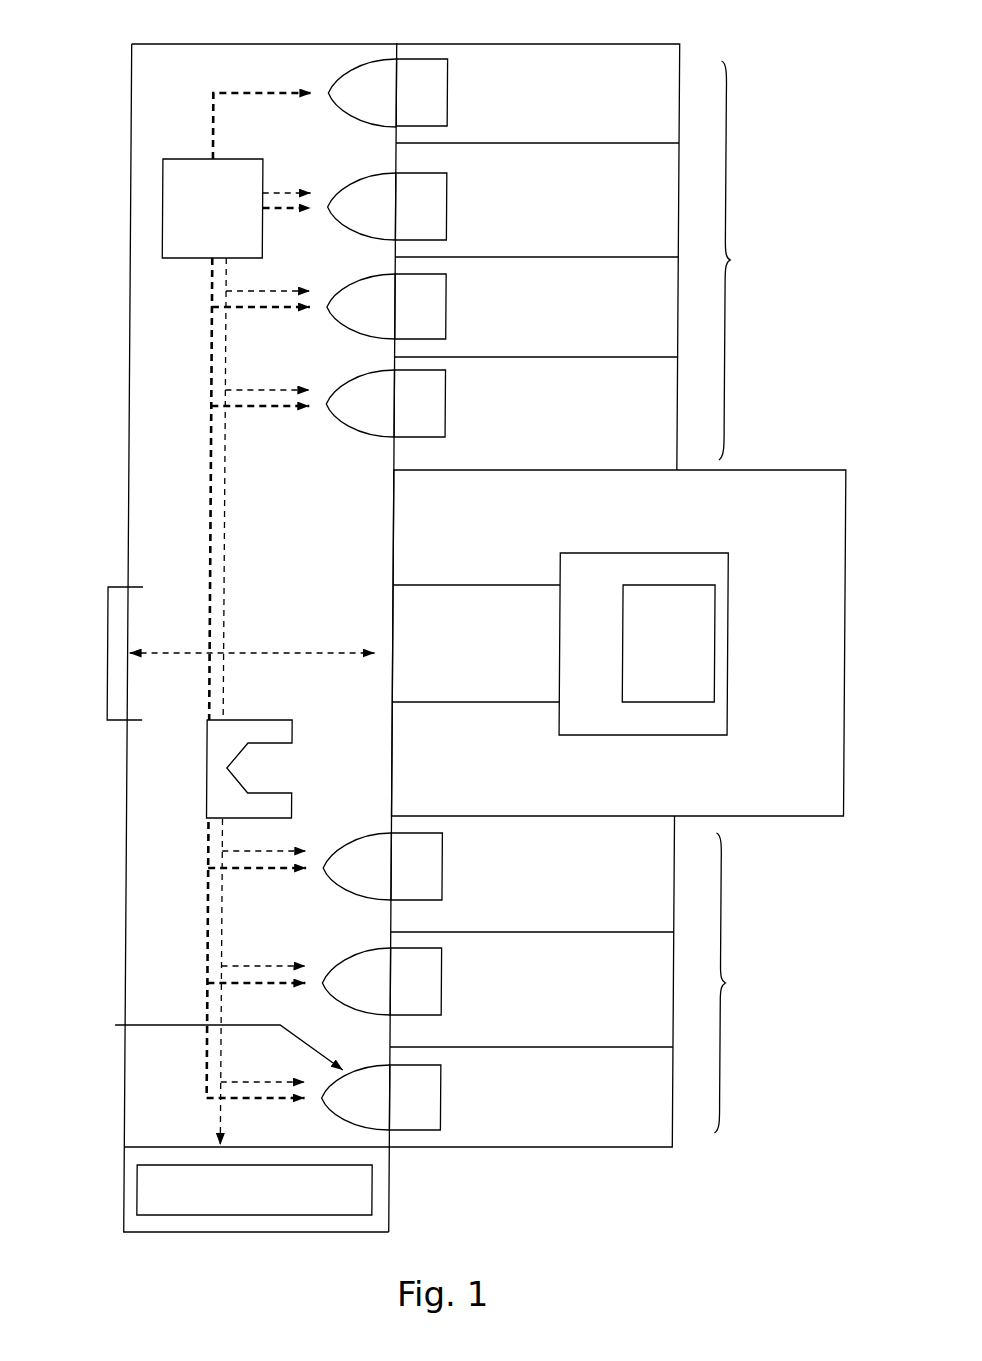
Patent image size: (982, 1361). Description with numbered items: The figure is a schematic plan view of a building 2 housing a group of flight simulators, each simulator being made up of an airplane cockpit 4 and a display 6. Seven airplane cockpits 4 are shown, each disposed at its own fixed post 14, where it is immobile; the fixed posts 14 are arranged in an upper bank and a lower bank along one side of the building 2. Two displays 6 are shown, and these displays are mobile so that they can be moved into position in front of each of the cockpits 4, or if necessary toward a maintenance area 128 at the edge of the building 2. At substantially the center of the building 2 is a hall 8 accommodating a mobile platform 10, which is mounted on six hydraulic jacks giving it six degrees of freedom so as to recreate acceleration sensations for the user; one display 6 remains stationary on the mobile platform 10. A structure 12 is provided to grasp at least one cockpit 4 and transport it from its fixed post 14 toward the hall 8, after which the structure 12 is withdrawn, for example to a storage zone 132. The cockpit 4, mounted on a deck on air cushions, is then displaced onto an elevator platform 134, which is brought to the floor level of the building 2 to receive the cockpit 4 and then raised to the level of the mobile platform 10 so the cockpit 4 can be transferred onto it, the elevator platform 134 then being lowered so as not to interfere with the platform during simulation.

The building 2 is at (179, 58).
The airplane cockpit 4 is at (370, 190).
The display 6 is at (190, 259).
The hall 8 is at (794, 478).
The mobile platform 10 is at (676, 726).
The structure 12 is at (212, 790).
The fixed post 14 is at (441, 101).
The maintenance area 128 is at (110, 654).
The storage zone 132 is at (374, 1194).
The elevator platform 134 is at (482, 582).